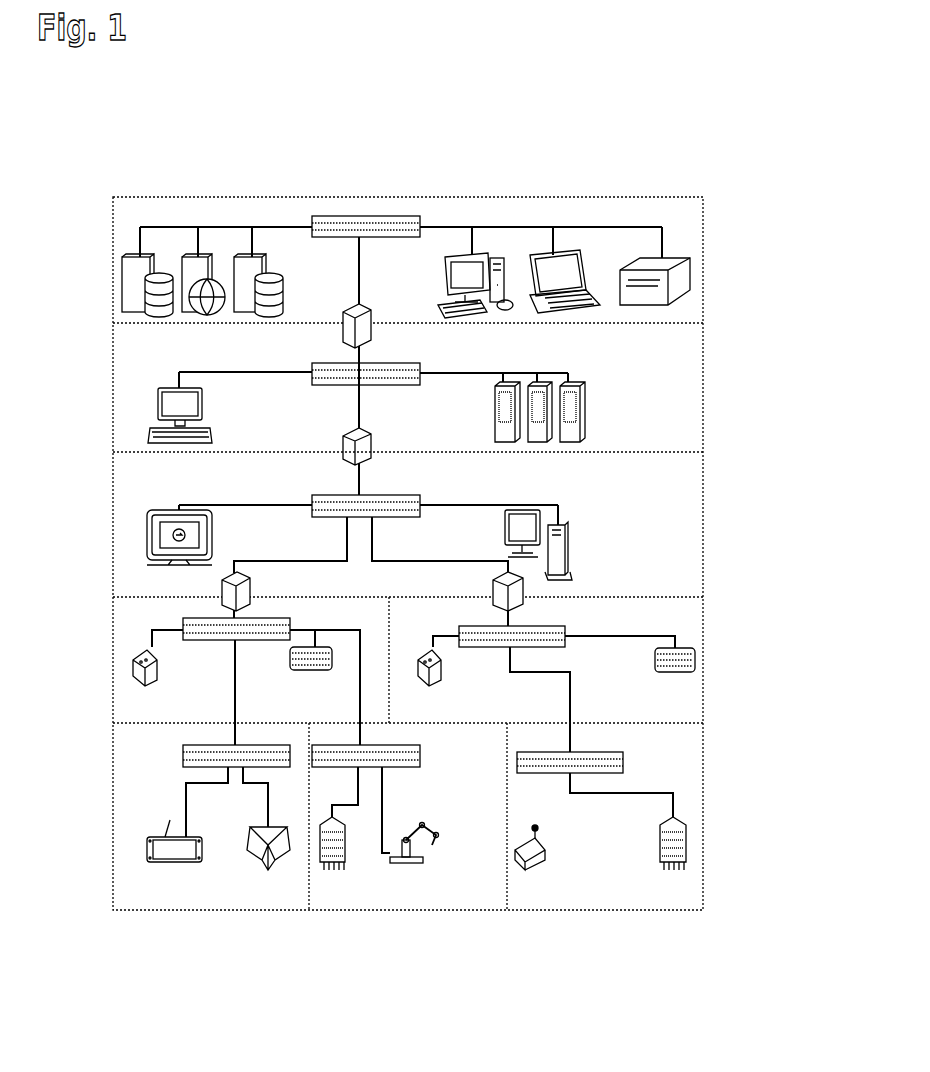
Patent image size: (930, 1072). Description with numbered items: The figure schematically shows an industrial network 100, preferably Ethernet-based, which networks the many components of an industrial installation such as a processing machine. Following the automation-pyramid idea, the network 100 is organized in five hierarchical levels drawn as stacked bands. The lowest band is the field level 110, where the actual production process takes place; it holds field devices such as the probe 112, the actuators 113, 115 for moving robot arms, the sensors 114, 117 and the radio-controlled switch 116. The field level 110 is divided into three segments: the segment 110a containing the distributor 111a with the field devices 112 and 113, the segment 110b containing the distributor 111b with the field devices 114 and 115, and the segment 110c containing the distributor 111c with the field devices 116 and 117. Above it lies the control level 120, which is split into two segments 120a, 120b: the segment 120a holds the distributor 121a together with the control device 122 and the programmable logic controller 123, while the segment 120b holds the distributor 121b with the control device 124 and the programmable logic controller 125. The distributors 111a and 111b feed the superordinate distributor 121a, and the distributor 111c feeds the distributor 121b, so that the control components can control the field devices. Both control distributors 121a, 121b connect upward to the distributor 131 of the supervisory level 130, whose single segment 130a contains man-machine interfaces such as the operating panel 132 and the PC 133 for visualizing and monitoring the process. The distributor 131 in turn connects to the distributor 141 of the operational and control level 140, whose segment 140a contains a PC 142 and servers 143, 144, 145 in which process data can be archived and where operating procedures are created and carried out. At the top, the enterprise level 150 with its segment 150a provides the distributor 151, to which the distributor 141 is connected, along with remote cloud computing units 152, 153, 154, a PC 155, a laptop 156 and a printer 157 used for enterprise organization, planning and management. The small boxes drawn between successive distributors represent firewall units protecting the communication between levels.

The industrial network 100 is at (590, 116).
The field level 110 is at (711, 754).
The first field-level segment 110a is at (186, 914).
The second field-level segment 110b is at (385, 914).
The third field-level segment 110c is at (600, 914).
The network distributor 111a is at (183, 755).
The network distributor 111b is at (400, 767).
The network distributor 111c is at (623, 765).
The probe 112 is at (147, 850).
The motor or actuator 113 is at (268, 870).
The sensor 114 is at (335, 870).
The motor or actuator 115 is at (418, 865).
The radio-controlled switch 116 is at (535, 870).
The sensor 117 is at (673, 870).
The control level 120 is at (712, 620).
The first control-level segment 120a is at (108, 619).
The second control-level segment 120b is at (710, 647).
The network distributor 121a is at (183, 626).
The network distributor 121b is at (520, 626).
The control device 122 is at (133, 666).
The programmable logic controller 123 is at (318, 668).
The control device 124 is at (440, 678).
The programmable logic controller 125 is at (695, 660).
The supervisory level 130 is at (716, 488).
The supervisory-level segment 130a is at (708, 527).
The network distributor 131 is at (370, 495).
The operating panel 132 is at (147, 533).
The PC 133 is at (567, 528).
The operational and control level 140 is at (716, 351).
The operational-and-control-level segment 140a is at (708, 390).
The network distributor 141 is at (370, 363).
The PC 142 is at (158, 400).
The server 143 is at (495, 412).
The server 144 is at (540, 382).
The server 145 is at (585, 402).
The enterprise level 150 is at (714, 220).
The enterprise-level segment 150a is at (709, 256).
The network distributor 151 is at (352, 216).
The remote computing unit 152 is at (140, 257).
The remote computing unit 153 is at (198, 257).
The remote computing unit 154 is at (252, 257).
The PC 155 is at (472, 255).
The laptop 156 is at (553, 255).
The printer 157 is at (662, 258).